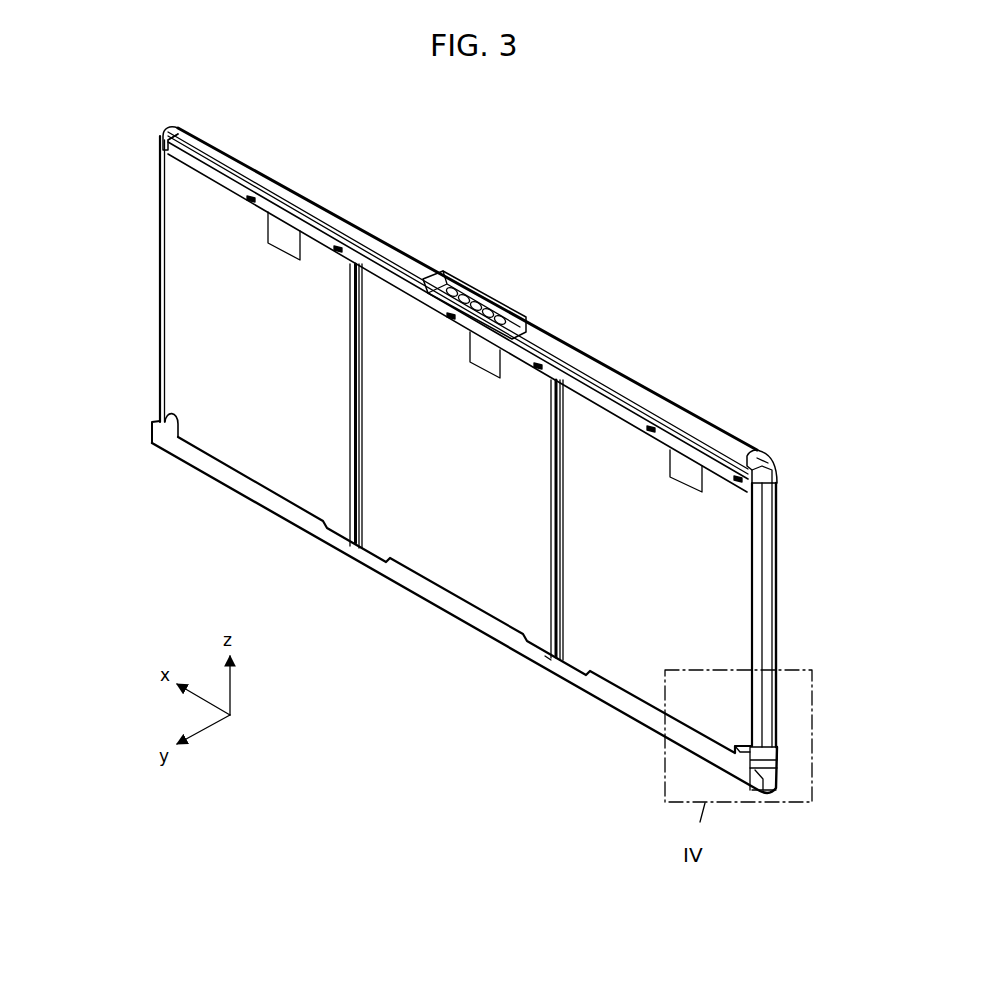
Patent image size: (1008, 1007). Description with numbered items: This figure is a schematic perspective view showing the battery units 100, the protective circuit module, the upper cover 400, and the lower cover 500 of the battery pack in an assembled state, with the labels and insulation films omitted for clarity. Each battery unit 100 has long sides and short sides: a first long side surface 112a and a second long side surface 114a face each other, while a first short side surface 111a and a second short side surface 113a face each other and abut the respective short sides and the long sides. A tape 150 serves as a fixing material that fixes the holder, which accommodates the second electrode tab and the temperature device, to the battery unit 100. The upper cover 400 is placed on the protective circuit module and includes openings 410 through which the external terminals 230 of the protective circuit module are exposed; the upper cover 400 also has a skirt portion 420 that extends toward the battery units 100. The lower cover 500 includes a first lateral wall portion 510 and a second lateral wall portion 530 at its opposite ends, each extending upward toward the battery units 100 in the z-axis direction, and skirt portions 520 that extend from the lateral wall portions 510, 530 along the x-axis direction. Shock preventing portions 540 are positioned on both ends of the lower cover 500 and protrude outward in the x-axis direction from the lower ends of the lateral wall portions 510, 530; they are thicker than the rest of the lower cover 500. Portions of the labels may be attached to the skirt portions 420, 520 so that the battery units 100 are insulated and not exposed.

The battery unit 100 is at (254, 438).
The first short side surface 111a is at (766, 603).
The first long side surface 112a is at (548, 660).
The second short side surface 113a is at (159, 268).
The second long side surface 114a is at (778, 535).
The tape 150 is at (683, 478).
The external terminal 230 is at (482, 300).
The upper cover 400 is at (470, 309).
The opening 410 is at (489, 276).
The skirt portion 420 is at (373, 270).
The lower cover 500 is at (477, 585).
The first lateral wall portion 510 is at (768, 755).
The skirt portion 520 is at (273, 498).
The second lateral wall portion 530 is at (160, 420).
The shock preventing portion 540 is at (477, 585).